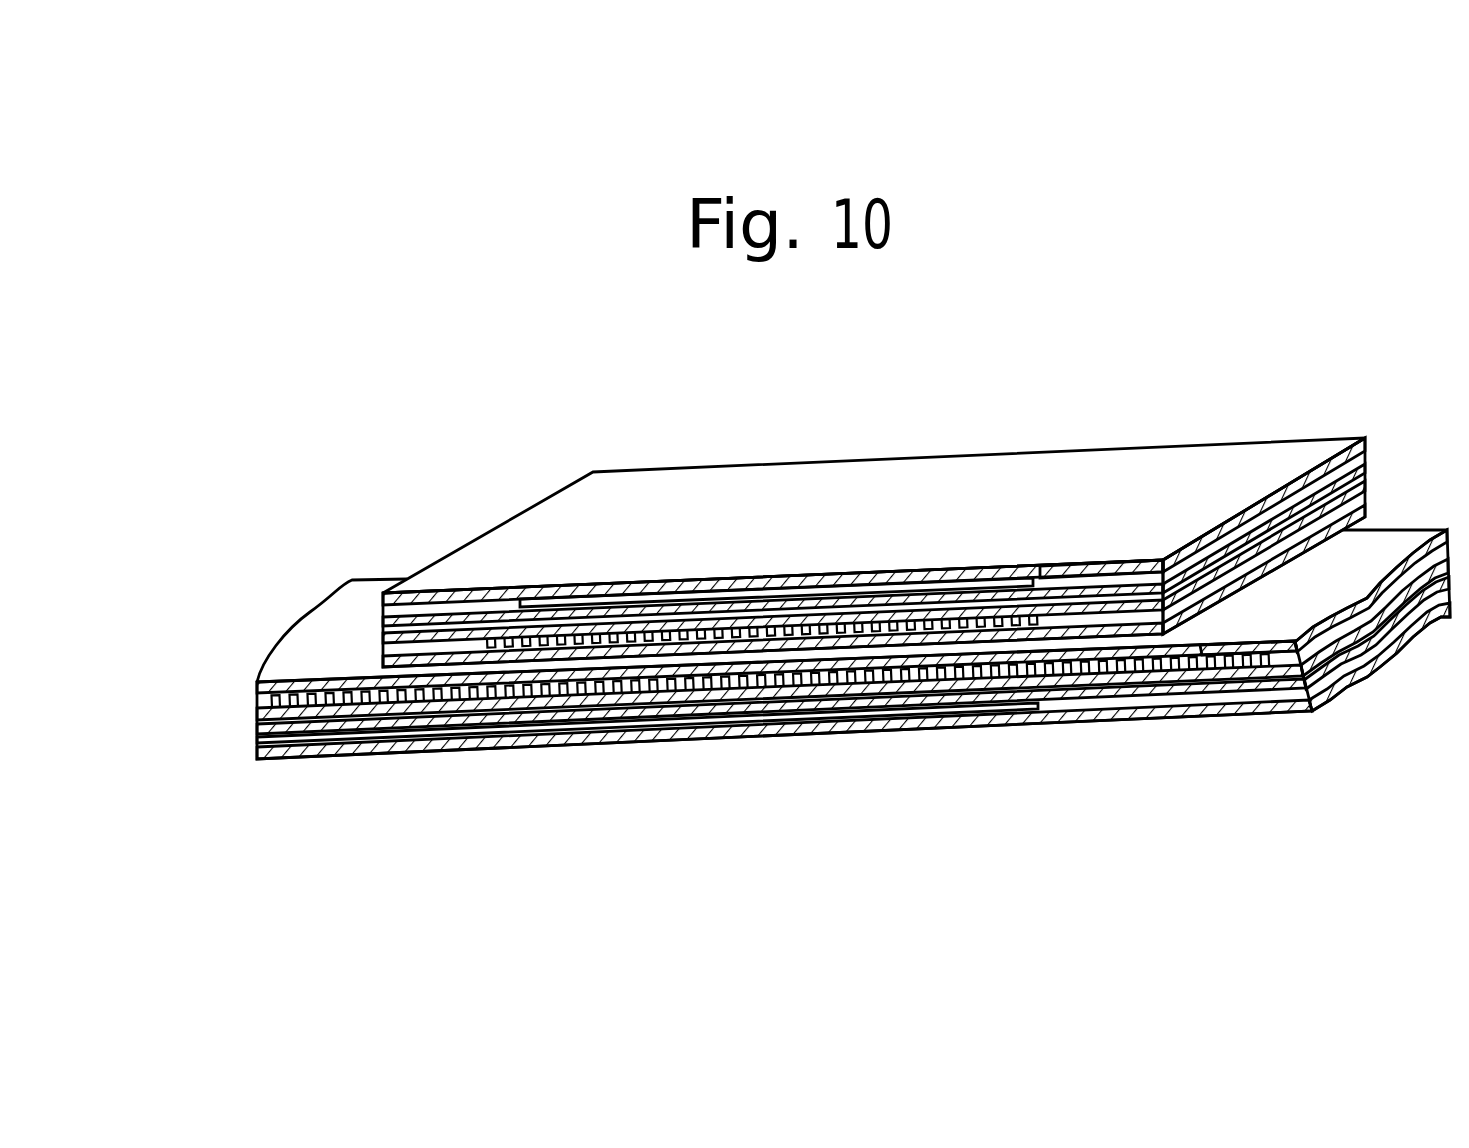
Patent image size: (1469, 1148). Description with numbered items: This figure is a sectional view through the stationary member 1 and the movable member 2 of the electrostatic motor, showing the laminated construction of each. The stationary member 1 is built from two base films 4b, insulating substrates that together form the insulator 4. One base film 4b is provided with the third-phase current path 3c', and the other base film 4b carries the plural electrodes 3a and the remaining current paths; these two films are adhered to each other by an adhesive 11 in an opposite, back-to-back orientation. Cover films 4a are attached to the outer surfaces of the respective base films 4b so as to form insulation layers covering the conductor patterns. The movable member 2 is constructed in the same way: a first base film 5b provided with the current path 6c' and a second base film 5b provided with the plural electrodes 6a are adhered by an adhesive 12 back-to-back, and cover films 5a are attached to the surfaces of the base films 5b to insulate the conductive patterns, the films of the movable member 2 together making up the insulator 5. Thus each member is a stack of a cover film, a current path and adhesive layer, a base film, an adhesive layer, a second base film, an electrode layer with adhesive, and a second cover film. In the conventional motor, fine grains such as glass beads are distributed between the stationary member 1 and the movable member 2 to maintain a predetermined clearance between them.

The stationary member 1 is at (779, 697).
The movable member 2 is at (778, 507).
The first-phase electrodes 3a is at (618, 692).
The third-phase current path 3c' is at (647, 767).
The insulator 4 is at (779, 675).
The cover film 4a is at (255, 680).
The base film 4b is at (259, 716).
The insulator 5 is at (778, 552).
The cover film 5a is at (403, 578).
The base film 5b is at (387, 622).
The first-phase electrodes 6a is at (968, 620).
The third-phase current path 6c' is at (776, 498).
The adhesive 11 is at (1237, 683).
The adhesive 12 is at (1118, 577).